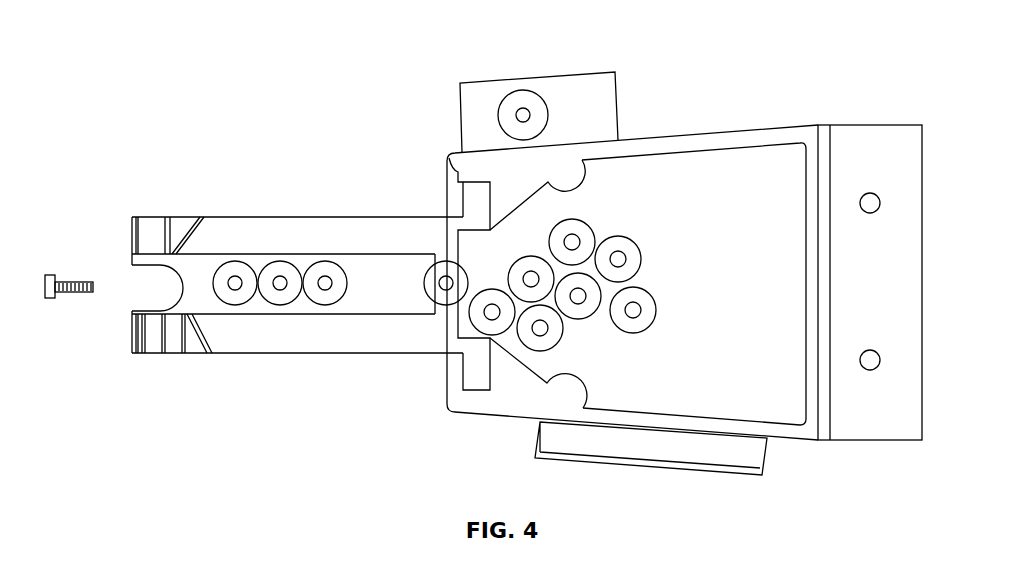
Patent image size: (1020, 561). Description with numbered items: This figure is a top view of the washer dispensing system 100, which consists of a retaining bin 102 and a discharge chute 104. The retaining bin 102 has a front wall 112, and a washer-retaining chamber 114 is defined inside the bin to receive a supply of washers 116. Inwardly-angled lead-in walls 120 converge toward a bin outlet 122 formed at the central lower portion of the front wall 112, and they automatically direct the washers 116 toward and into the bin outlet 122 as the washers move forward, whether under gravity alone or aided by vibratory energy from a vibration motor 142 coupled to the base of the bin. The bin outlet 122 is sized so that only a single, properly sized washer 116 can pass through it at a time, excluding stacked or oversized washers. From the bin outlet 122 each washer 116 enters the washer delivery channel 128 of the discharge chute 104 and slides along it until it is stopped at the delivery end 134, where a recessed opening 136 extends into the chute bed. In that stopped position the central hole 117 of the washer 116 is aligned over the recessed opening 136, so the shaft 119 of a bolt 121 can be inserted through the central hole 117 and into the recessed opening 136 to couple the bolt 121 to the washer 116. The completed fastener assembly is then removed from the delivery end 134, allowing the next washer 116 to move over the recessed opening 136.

The washer dispensing system 100 is at (183, 44).
The retaining bin 102 is at (781, 122).
The discharge chute 104 is at (271, 276).
The front wall 112 is at (457, 168).
The washer-retaining chamber 114 is at (723, 200).
The washers 116 is at (449, 238).
The central hole 117 is at (235, 283).
The shaft 119 is at (47, 281).
The lead-in walls 120 is at (578, 182).
The bolt 121 is at (42, 285).
The bin outlet 122 is at (500, 233).
The washer delivery channel 128 is at (365, 295).
The delivery end 134 is at (158, 217).
The recessed opening 136 is at (153, 288).
The vibration motor 142 is at (750, 453).